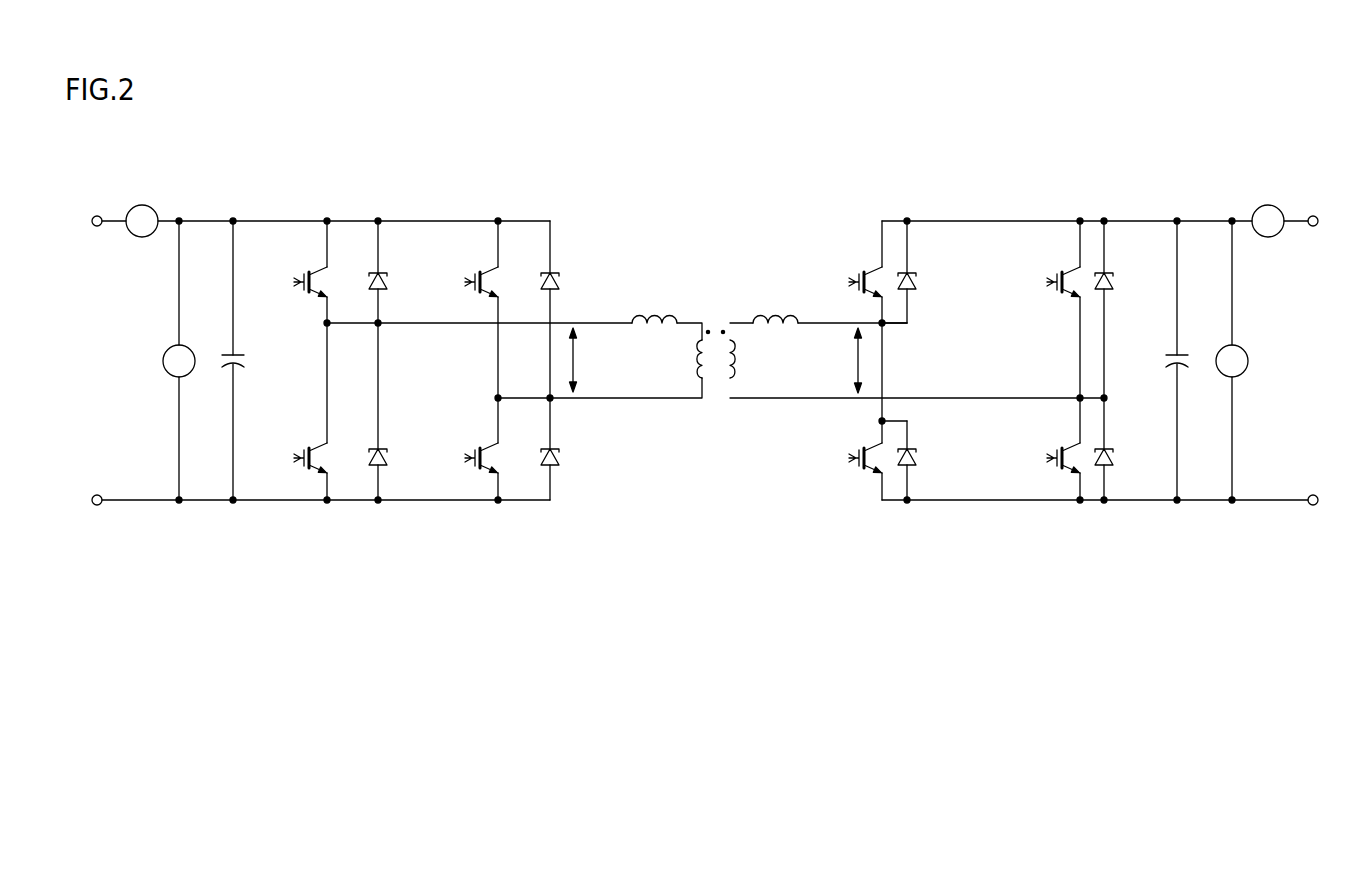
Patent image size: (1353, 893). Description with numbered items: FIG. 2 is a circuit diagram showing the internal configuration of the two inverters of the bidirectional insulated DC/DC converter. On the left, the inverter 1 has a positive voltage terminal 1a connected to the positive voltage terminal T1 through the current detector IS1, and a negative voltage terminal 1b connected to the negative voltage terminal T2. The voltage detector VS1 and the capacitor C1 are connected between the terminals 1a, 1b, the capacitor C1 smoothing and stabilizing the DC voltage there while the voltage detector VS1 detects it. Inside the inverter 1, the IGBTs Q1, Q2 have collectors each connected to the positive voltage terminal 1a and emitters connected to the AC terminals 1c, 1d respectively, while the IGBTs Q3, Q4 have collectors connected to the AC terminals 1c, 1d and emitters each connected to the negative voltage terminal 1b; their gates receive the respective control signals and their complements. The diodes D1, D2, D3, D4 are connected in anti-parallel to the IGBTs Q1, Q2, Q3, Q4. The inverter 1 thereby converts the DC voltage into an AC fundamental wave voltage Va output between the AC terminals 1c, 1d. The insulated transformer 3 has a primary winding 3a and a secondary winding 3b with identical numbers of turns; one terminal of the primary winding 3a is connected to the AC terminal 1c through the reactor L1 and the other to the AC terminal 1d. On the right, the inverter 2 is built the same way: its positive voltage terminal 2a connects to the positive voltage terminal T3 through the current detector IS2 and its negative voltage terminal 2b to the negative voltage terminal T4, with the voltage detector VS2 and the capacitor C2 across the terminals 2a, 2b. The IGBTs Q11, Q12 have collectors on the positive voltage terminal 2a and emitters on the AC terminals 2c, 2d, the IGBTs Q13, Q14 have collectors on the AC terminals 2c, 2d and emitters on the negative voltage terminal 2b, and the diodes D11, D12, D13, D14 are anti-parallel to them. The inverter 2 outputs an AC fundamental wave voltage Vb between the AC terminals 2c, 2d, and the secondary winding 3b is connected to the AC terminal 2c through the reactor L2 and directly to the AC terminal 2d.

The inverter 1 is at (565, 167).
The positive voltage terminal 1a is at (327, 216).
The negative voltage terminal 1b is at (327, 507).
The AC terminal 1c is at (385, 328).
The AC terminal 1d is at (555, 402).
The inverter 2 is at (818, 167).
The positive voltage terminal 2a is at (1080, 216).
The negative voltage terminal 2b is at (1080, 507).
The AC terminal 2c is at (887, 328).
The AC terminal 2d is at (1077, 395).
The insulated transformer 3 is at (716, 404).
The primary winding 3a is at (704, 395).
The secondary winding 3b is at (732, 386).
The positive voltage terminal T1 is at (98, 214).
The negative voltage terminal T2 is at (97, 507).
The positive voltage terminal T3 is at (1313, 214).
The negative voltage terminal T4 is at (1313, 507).
The current detector IS1 is at (142, 204).
The current detector IS2 is at (1268, 204).
The voltage detector VS1 is at (162, 361).
The voltage detector VS2 is at (1249, 361).
The capacitor C1 is at (223, 351).
The capacitor C2 is at (1184, 351).
The IGBT Q1 is at (322, 267).
The IGBT Q2 is at (494, 267).
The IGBT Q3 is at (322, 443).
The IGBT Q4 is at (494, 443).
The diode D1 is at (376, 266).
The diode D2 is at (548, 266).
The diode D3 is at (376, 443).
The diode D4 is at (548, 443).
The IGBT Q11 is at (877, 267).
The IGBT Q12 is at (1075, 267).
The IGBT Q13 is at (877, 443).
The IGBT Q14 is at (1075, 443).
The diode D11 is at (912, 266).
The diode D12 is at (1108, 266).
The diode D13 is at (912, 443).
The diode D14 is at (1108, 443).
The reactor L1 is at (655, 311).
The reactor L2 is at (765, 311).
The AC fundamental wave voltage Va is at (587, 360).
The AC fundamental wave voltage Vb is at (843, 360).